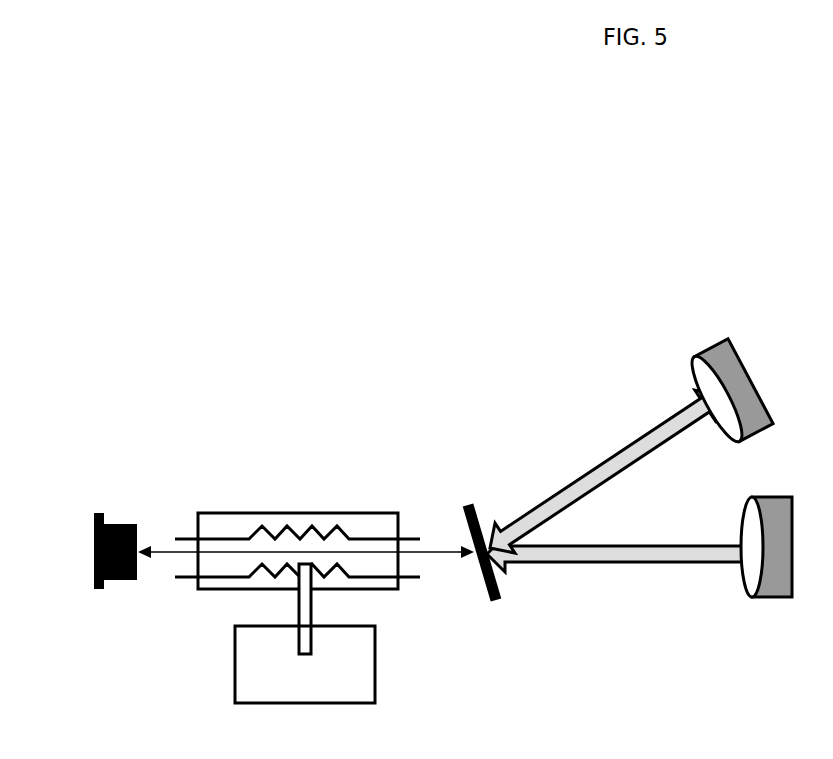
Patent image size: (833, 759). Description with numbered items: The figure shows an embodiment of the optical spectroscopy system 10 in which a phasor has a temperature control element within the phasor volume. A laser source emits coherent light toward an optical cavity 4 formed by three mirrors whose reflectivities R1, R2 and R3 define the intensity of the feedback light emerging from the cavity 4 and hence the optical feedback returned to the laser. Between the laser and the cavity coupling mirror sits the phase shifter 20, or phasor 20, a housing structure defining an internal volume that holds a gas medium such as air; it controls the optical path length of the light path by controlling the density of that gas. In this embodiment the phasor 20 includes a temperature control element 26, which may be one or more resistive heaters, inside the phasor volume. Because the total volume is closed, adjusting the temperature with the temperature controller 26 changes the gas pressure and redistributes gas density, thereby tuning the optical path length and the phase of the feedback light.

The optical spectroscopy system 10 is at (322, 333).
The phase shifter 20 is at (218, 513).
The temperature control element 26 is at (237, 591).
The optical cavity 4 is at (621, 476).
The reflectivity of coupling mirror R1 is at (499, 583).
The reflectivity of second cavity mirror R2 is at (766, 579).
The reflectivity of third cavity mirror R3 is at (705, 393).